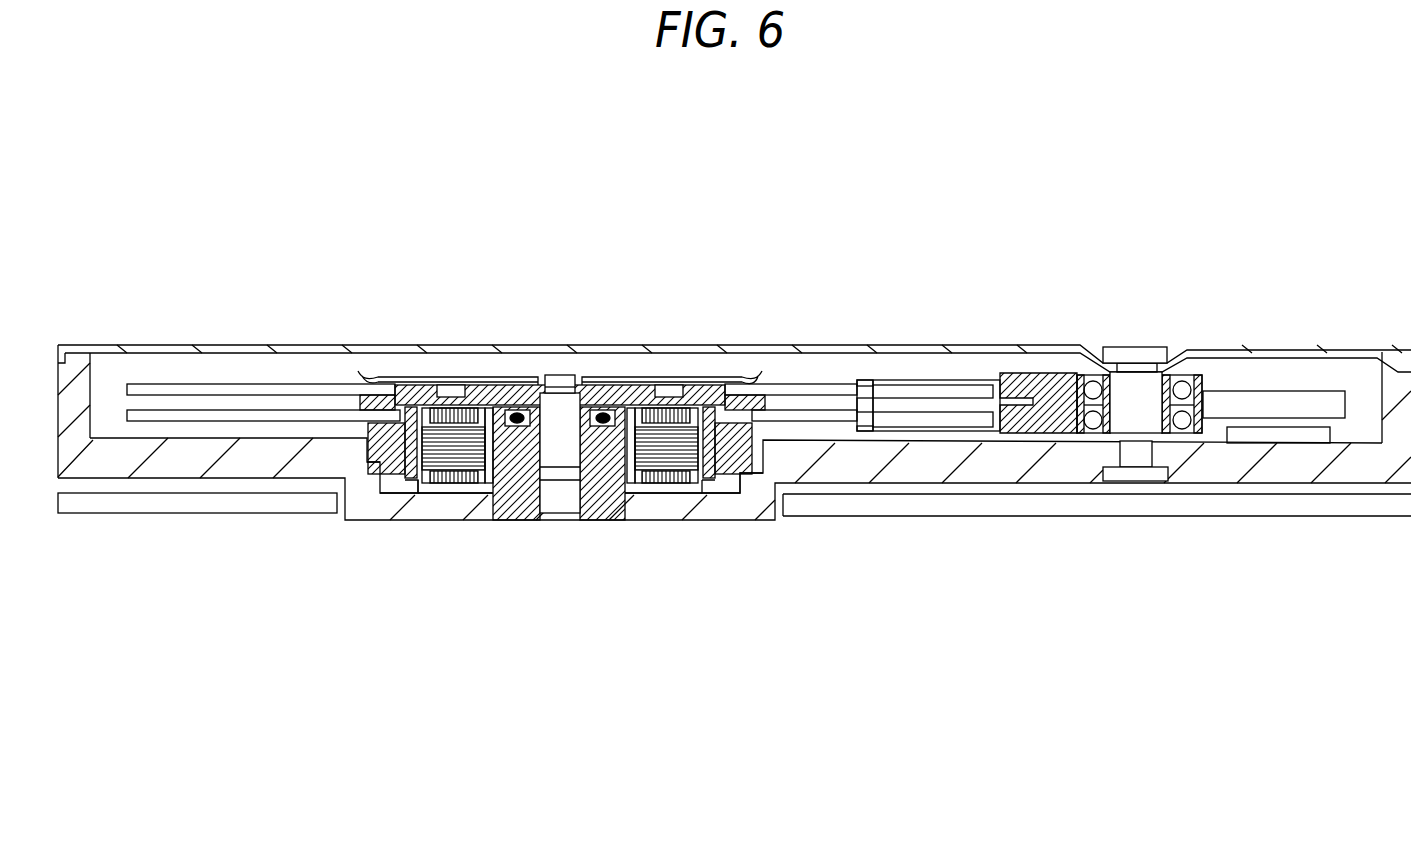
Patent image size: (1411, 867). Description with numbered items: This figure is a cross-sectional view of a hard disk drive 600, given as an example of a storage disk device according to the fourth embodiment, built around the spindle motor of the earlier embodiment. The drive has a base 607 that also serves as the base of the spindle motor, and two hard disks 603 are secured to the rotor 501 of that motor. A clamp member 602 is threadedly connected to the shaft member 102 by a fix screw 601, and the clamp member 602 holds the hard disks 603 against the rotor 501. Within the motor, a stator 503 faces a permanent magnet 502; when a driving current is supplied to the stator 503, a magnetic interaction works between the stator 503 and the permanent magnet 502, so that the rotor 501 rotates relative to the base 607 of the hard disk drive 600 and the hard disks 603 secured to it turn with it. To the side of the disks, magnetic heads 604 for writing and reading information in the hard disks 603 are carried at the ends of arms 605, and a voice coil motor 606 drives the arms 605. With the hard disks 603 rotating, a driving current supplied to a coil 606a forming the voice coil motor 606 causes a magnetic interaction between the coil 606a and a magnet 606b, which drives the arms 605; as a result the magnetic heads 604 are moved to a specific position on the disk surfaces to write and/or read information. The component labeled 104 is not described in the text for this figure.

The hard disk drive 600 is at (135, 345).
The hard disks 603 is at (262, 410).
The rotor 501 is at (470, 385).
The fix screw 601 is at (557, 375).
The clamp member 602 is at (620, 375).
The magnetic heads 604 is at (860, 380).
The arms 605 is at (945, 380).
The voice coil motor 606 is at (1272, 340).
The coil 606a is at (1232, 391).
The magnet 606b is at (1297, 427).
The permanent magnet 502 is at (425, 493).
The stator 503 is at (458, 450).
The shaft member 102 is at (548, 430).
The bearing sleeve 104 is at (605, 483).
The base 607 is at (745, 483).